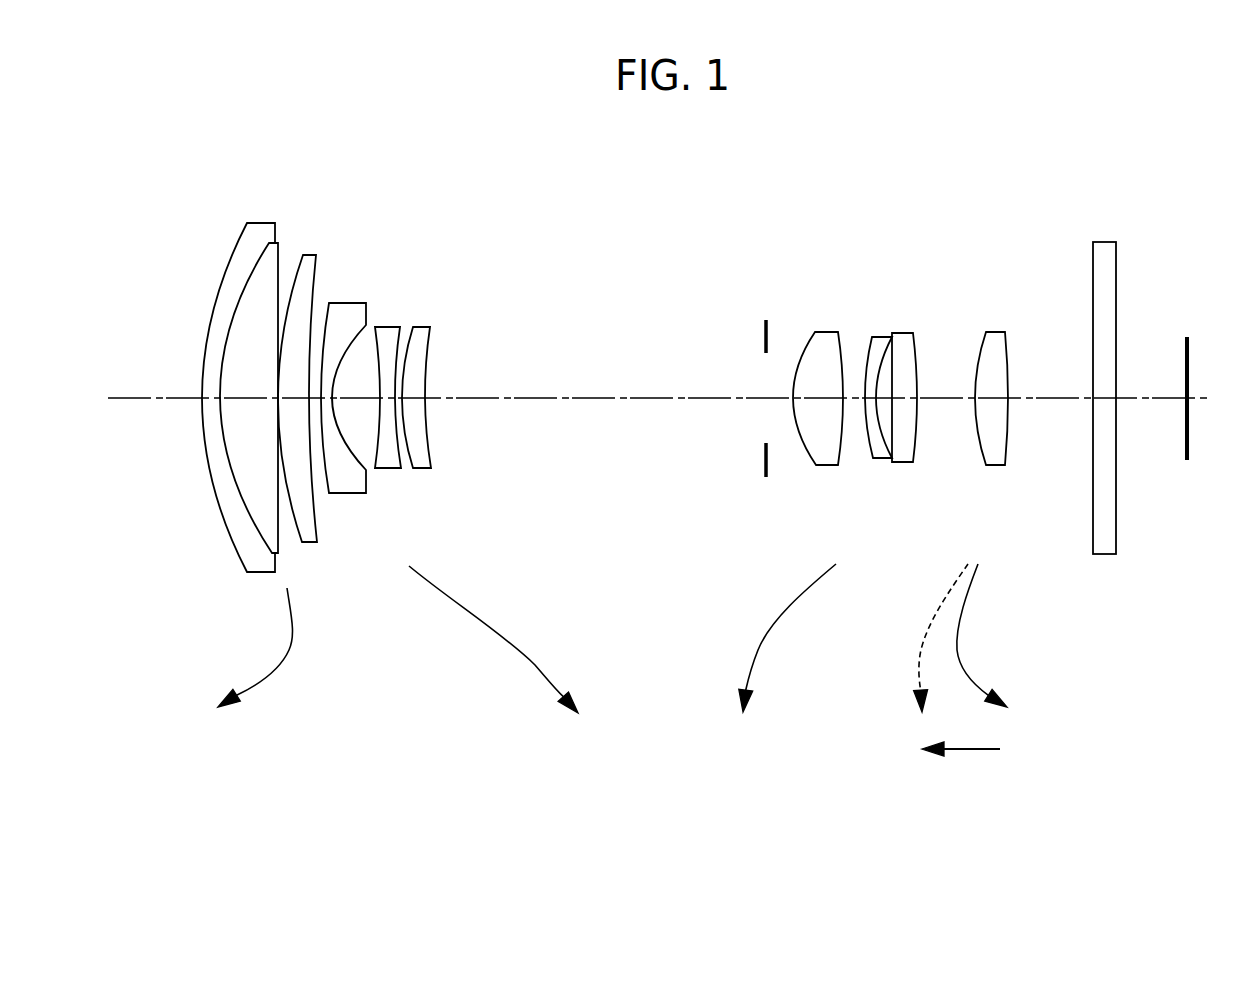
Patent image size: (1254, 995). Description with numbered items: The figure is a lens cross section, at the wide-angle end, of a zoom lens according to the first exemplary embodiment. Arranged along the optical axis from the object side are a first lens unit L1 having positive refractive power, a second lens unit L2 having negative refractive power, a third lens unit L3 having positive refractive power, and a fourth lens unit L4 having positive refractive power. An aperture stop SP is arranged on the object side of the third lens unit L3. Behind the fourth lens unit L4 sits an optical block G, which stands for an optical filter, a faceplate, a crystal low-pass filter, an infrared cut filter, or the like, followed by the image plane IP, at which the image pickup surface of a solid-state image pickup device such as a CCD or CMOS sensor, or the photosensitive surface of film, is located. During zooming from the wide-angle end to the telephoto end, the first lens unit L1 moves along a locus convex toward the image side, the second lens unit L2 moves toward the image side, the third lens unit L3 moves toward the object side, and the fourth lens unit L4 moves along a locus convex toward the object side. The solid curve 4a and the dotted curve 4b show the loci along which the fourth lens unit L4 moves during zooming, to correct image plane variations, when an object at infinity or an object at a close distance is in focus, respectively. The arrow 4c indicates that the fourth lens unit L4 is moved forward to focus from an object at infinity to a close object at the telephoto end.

The first lens unit L1 is at (200, 203).
The second lens unit L2 is at (438, 253).
The third lens unit L3 is at (922, 202).
The fourth lens unit L4 is at (1023, 253).
The aperture stop SP is at (763, 333).
The optical block G is at (1103, 248).
The image plane IP is at (1190, 357).
The solid curve 4a is at (982, 635).
The dotted curve 4b is at (926, 638).
The arrow 4c is at (961, 738).